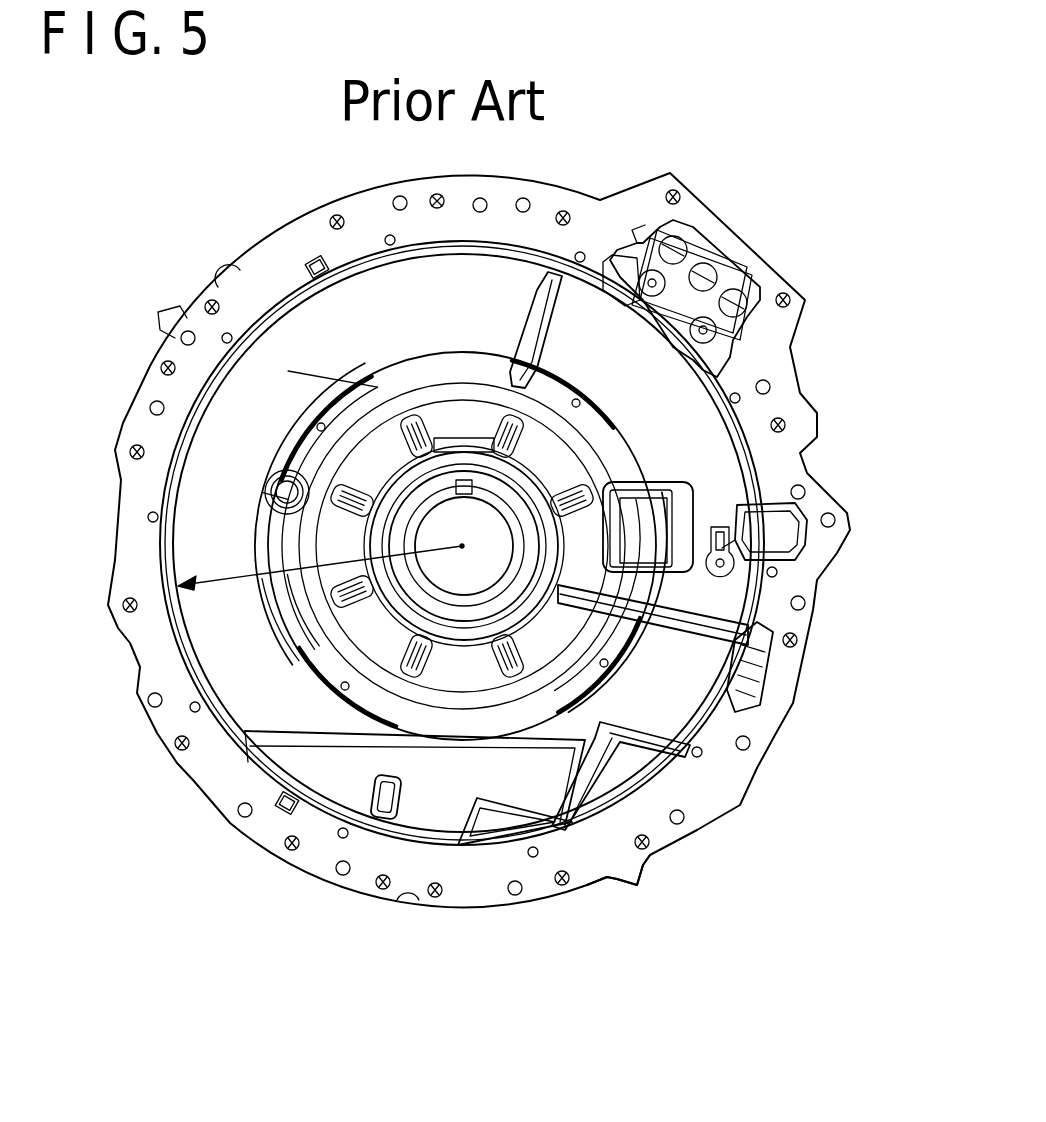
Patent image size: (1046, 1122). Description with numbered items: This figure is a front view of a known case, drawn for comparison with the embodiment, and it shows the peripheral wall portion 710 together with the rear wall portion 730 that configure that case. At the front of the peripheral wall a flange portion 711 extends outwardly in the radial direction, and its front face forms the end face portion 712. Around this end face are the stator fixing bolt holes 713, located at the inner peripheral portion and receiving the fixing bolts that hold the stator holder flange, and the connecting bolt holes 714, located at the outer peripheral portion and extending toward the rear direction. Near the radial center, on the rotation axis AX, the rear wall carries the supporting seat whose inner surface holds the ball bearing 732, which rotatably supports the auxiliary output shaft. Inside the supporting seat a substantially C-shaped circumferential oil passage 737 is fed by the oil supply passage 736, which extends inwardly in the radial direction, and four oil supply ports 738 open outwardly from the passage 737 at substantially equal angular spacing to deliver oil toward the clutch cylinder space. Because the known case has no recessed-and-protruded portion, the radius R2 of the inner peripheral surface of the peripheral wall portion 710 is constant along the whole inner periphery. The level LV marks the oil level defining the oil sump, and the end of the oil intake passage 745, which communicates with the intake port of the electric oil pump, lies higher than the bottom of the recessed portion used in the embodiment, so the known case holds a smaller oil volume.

The peripheral wall portion 710 is at (248, 226).
The flange portion 711 is at (655, 862).
The end face portion 712 is at (757, 725).
The stator fixing bolt hole 713 is at (343, 840).
The connecting bolt hole 714 is at (350, 876).
The rear wall portion 730 is at (700, 453).
The ball bearing 732 is at (463, 470).
The oil supply passage 736 is at (710, 630).
The circumferential oil passage 737 is at (603, 440).
The oil supply port 738 is at (588, 400).
The oil intake passage 745 is at (683, 757).
The rotation axis AX is at (460, 526).
The radius of the inner peripheral surface R2 is at (217, 587).
The level of the oil LV is at (167, 773).